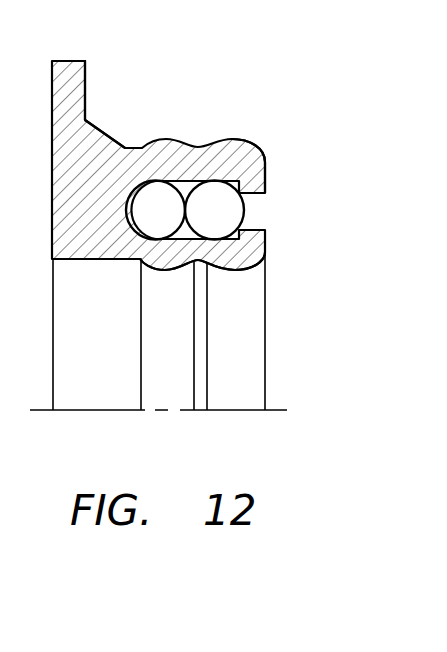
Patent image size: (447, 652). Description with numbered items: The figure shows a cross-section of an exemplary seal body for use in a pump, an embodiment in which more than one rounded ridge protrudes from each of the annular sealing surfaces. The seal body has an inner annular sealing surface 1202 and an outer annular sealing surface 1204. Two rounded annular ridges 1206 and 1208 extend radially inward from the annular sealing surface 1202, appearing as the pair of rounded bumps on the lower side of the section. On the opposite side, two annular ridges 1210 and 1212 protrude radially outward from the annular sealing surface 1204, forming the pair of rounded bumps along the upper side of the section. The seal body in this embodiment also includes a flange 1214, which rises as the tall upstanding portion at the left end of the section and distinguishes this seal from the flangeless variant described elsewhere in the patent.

The annular sealing surface 1202 is at (108, 262).
The annular sealing surface 1204 is at (116, 147).
The rounded annular ridge 1206 is at (167, 269).
The rounded annular ridge 1208 is at (237, 270).
The annular ridge 1210 is at (180, 140).
The annular ridge 1212 is at (247, 140).
The flange 1214 is at (86, 78).